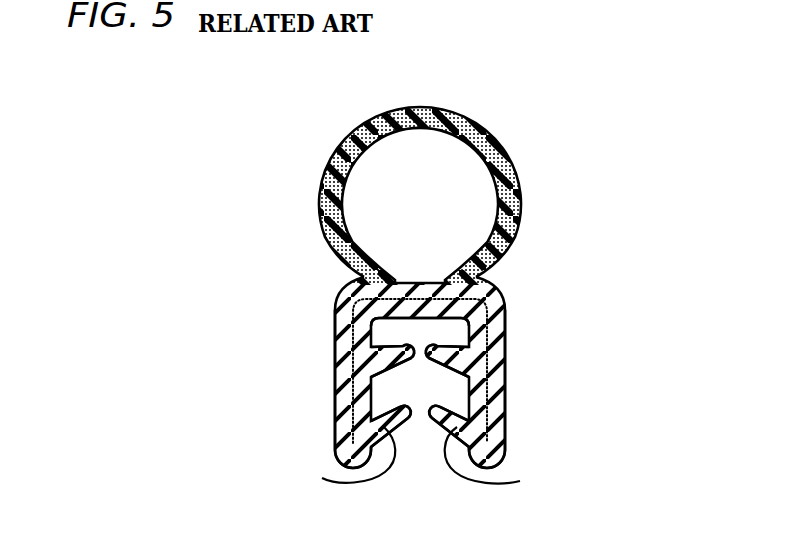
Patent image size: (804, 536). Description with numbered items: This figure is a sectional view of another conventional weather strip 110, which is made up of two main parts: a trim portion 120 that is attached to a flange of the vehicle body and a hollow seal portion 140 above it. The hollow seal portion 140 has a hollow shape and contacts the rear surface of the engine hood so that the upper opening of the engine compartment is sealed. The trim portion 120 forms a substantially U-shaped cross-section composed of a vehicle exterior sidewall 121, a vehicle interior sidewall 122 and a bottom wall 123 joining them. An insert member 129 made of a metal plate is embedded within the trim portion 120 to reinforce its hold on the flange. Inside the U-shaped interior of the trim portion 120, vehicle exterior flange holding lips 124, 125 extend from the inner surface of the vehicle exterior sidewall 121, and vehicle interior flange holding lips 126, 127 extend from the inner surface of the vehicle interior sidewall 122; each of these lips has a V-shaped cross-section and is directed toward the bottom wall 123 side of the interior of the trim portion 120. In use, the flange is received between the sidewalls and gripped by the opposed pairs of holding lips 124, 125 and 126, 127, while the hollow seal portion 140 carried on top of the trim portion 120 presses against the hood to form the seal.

The weather strip 110 is at (294, 175).
The hollow seal portion 140 is at (513, 152).
The trim portion 120 is at (320, 411).
The vehicle exterior sidewall 121 is at (335, 372).
The vehicle interior sidewall 122 is at (505, 383).
The insert member 129 is at (343, 308).
The bottom wall 123 is at (491, 268).
The vehicle exterior flange holding lip 125 is at (378, 344).
The vehicle interior flange holding lip 127 is at (470, 346).
The vehicle exterior flange holding lip 124 is at (322, 478).
The vehicle interior flange holding lip 126 is at (520, 481).